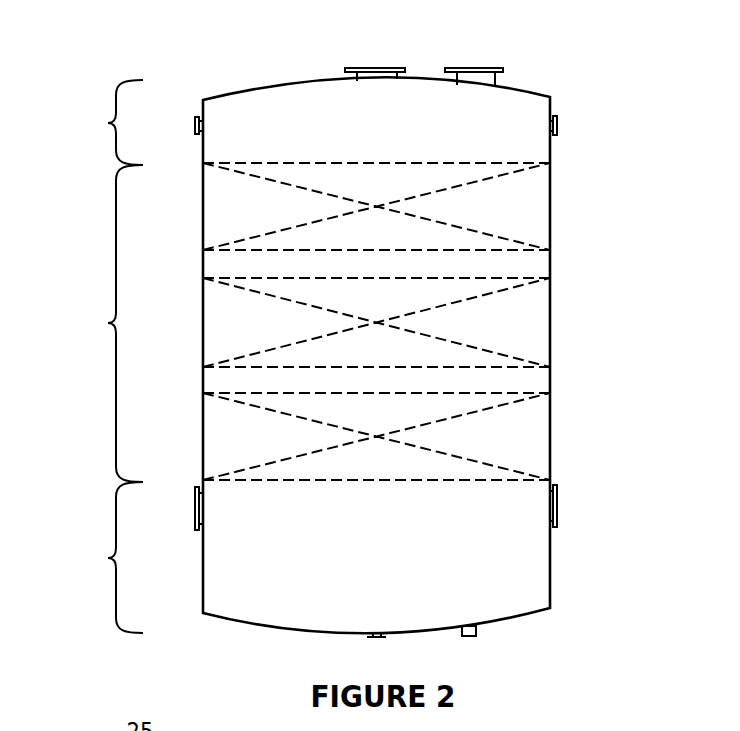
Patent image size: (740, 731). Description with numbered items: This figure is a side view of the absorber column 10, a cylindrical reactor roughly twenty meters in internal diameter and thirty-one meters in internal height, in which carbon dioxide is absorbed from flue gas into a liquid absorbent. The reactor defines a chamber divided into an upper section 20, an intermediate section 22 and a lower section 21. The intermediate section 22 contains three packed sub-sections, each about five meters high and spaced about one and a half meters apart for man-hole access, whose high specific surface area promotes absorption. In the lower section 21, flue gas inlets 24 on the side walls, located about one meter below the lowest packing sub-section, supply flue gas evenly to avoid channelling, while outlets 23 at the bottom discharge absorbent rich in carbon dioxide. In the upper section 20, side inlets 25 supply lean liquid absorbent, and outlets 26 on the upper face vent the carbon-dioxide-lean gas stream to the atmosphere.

The absorber column 10 is at (236, 72).
The upper section 20 is at (107, 123).
The lower section 21 is at (107, 558).
The intermediate section 22 is at (107, 322).
The outlets 23 is at (368, 635).
The flue gas inlets 24 is at (197, 512).
The inlets 25 is at (195, 129).
The outlets 26 is at (379, 68).